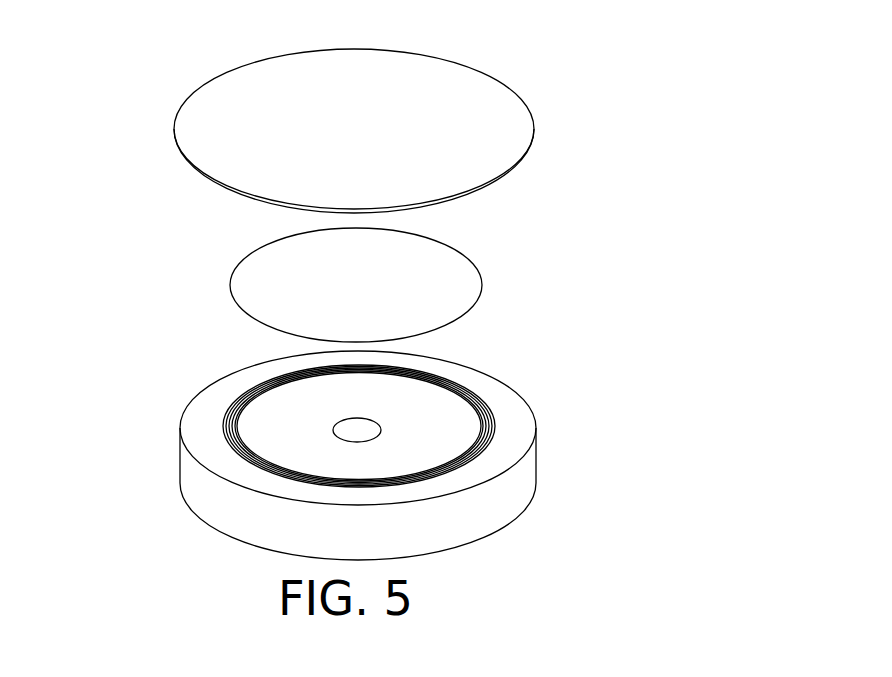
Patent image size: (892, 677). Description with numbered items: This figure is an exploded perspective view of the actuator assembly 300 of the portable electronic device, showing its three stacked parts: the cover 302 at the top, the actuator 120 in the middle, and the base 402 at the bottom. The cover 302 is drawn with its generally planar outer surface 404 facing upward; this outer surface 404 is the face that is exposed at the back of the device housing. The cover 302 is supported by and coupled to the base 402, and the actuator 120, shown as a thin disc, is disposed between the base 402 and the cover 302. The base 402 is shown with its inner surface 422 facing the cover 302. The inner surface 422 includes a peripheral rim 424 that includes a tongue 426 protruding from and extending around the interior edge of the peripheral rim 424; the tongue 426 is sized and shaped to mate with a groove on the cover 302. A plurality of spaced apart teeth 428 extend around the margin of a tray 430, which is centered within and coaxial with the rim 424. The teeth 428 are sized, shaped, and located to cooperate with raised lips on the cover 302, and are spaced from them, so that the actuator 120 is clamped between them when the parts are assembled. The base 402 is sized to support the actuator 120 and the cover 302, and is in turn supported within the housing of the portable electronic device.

The actuator assembly 300 is at (175, 554).
The cover 302 is at (516, 90).
The outer surface 404 is at (427, 63).
The actuator 120 is at (473, 265).
The base 402 is at (536, 462).
The inner surface 422 is at (512, 418).
The peripheral rim 424 is at (200, 438).
The tongue 426 is at (223, 425).
The teeth 428 is at (248, 408).
The tray 430 is at (412, 400).